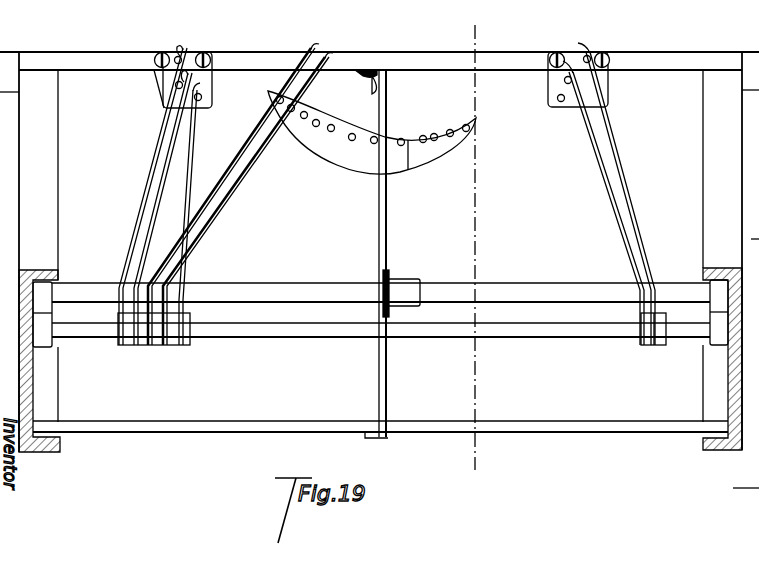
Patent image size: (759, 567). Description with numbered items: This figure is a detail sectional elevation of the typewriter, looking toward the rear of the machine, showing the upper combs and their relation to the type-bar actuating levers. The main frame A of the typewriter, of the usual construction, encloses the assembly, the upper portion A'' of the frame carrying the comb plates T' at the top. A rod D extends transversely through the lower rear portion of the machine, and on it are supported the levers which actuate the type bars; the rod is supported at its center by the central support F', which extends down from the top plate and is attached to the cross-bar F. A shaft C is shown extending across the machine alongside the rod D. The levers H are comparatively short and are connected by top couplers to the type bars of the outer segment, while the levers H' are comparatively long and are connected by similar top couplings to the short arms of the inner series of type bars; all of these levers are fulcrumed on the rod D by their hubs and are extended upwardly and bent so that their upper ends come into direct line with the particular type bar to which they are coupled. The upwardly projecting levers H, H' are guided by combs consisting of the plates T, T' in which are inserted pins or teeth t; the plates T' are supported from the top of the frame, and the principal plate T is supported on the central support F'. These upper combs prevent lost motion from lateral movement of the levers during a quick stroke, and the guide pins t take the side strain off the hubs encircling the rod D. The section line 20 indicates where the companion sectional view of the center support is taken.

The main frame A is at (380, 252).
The frame top rail A'' is at (545, 39).
The comb plates T' is at (394, 91).
The pins or teeth t is at (202, 97).
The levers H is at (387, 194).
The levers H' is at (240, 194).
The principal comb plate T is at (372, 132).
The central support F' is at (384, 254).
The shaft C is at (580, 283).
The rod D is at (578, 338).
The cross-bar F is at (380, 414).
The section line 20 is at (484, 21).